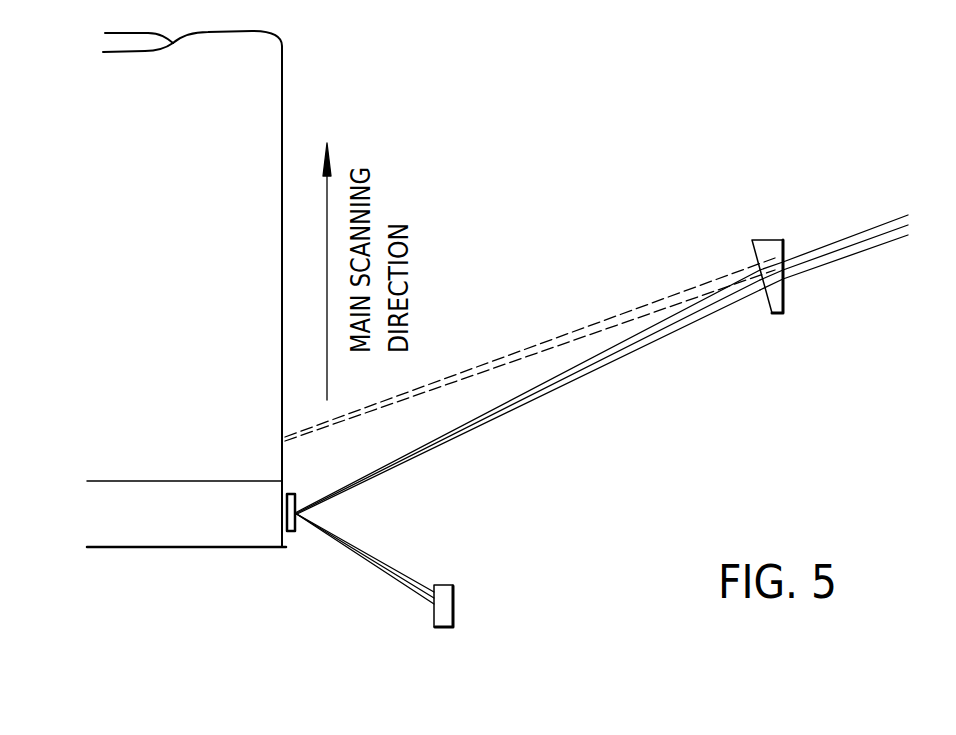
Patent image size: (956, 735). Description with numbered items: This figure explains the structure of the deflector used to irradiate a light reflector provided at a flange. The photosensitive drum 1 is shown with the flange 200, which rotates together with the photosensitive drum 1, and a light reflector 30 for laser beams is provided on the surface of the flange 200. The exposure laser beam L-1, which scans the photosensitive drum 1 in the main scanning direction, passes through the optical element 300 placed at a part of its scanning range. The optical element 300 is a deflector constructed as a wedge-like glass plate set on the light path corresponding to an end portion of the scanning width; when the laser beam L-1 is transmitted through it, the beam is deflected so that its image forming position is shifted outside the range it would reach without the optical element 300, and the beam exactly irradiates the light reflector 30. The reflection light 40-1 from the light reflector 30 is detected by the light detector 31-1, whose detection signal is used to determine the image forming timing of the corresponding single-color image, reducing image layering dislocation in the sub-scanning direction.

The photosensitive drum 1 is at (270, 102).
The flange 200 is at (150, 517).
The light reflector 30 is at (295, 532).
The reflection light 40-1 is at (382, 577).
The light detector 31-1 is at (453, 613).
The optical element 300 is at (768, 233).
The exposure laser beam L-1 is at (868, 240).